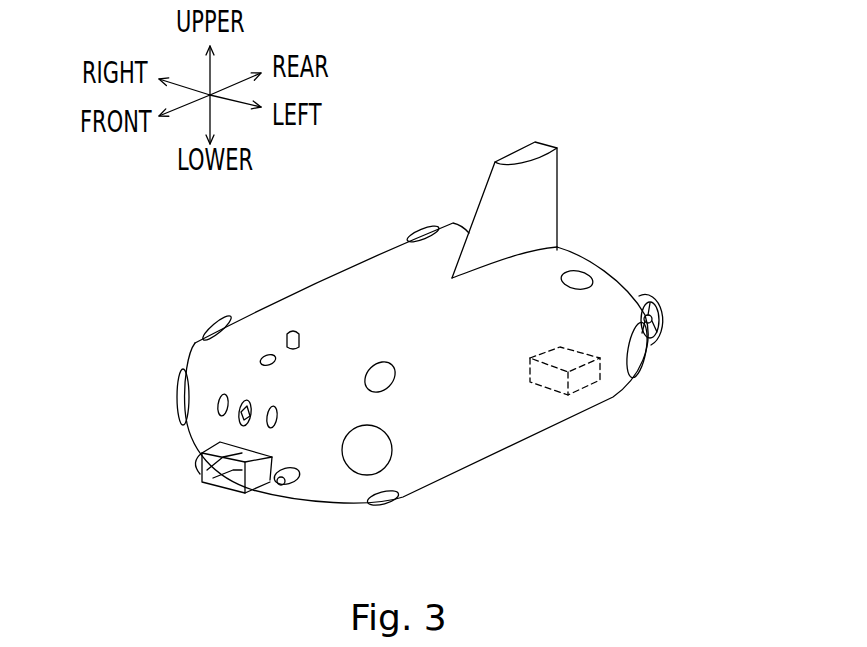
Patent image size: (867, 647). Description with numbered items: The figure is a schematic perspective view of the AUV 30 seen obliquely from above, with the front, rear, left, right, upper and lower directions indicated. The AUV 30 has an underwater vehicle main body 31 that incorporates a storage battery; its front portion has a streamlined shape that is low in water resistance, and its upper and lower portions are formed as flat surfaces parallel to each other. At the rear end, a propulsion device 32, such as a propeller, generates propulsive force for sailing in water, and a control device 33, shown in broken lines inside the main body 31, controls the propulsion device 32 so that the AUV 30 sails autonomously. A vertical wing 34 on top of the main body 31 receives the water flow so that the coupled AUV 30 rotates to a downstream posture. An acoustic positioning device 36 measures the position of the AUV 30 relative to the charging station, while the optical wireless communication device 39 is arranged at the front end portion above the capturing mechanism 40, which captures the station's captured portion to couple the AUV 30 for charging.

The AUV 30 is at (697, 157).
The underwater vehicle main body 31 is at (322, 273).
The propulsion device 32 is at (670, 318).
The control device 33 is at (568, 395).
The vertical wing 34 is at (558, 184).
The acoustic positioning device 36 is at (290, 327).
The optical wireless communication device 39 is at (243, 405).
The capturing mechanism 40 is at (197, 462).